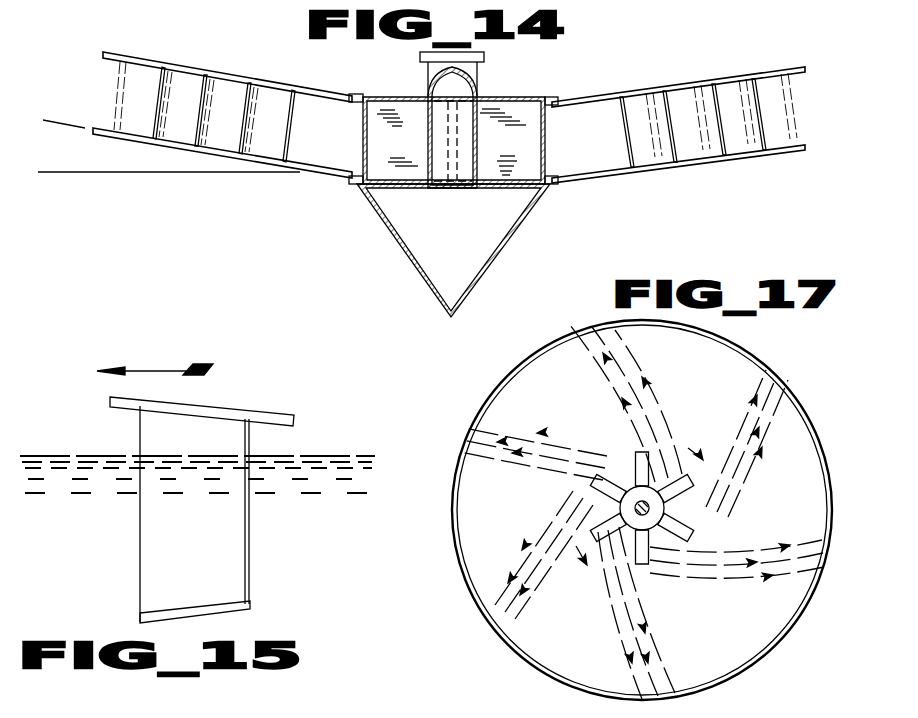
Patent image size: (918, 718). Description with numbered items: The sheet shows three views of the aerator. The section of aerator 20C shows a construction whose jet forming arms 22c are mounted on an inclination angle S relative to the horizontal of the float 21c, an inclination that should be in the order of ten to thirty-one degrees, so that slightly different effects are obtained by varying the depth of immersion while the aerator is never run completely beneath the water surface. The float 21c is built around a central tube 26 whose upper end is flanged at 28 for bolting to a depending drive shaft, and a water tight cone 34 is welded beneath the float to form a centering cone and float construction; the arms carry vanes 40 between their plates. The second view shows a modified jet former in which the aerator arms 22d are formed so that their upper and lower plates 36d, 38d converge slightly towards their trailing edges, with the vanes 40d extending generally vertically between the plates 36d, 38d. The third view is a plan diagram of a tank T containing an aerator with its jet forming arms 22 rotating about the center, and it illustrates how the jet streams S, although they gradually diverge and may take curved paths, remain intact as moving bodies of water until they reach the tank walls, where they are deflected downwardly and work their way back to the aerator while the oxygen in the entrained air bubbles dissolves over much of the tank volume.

In FIG. 14, the aerator 20C is at (667, 43).
In FIG. 14, the jet forming arms 22c is at (472, 104).
In FIG. 14, the blade slat 40 is at (273, 100).
In FIG. 14, the float 21c is at (425, 139).
In FIG. 14, the central tube 26 is at (478, 86).
In FIG. 14, the flange 28 is at (485, 61).
In FIG. 14, the water tight cone 34 is at (515, 228).
In FIG. 14, the inclination angle / jet stream S is at (169, 146).
In FIG. 17, the inclination angle / jet stream S is at (747, 418).
In FIG. 15, the aerator arms 22d is at (226, 489).
In FIG. 15, the upper plate 36d is at (270, 416).
In FIG. 15, the vanes 40d is at (218, 550).
In FIG. 15, the lower plate 38d is at (250, 604).
In FIG. 17, the jet forming arms 22 is at (664, 494).
In FIG. 17, the tank T is at (768, 367).